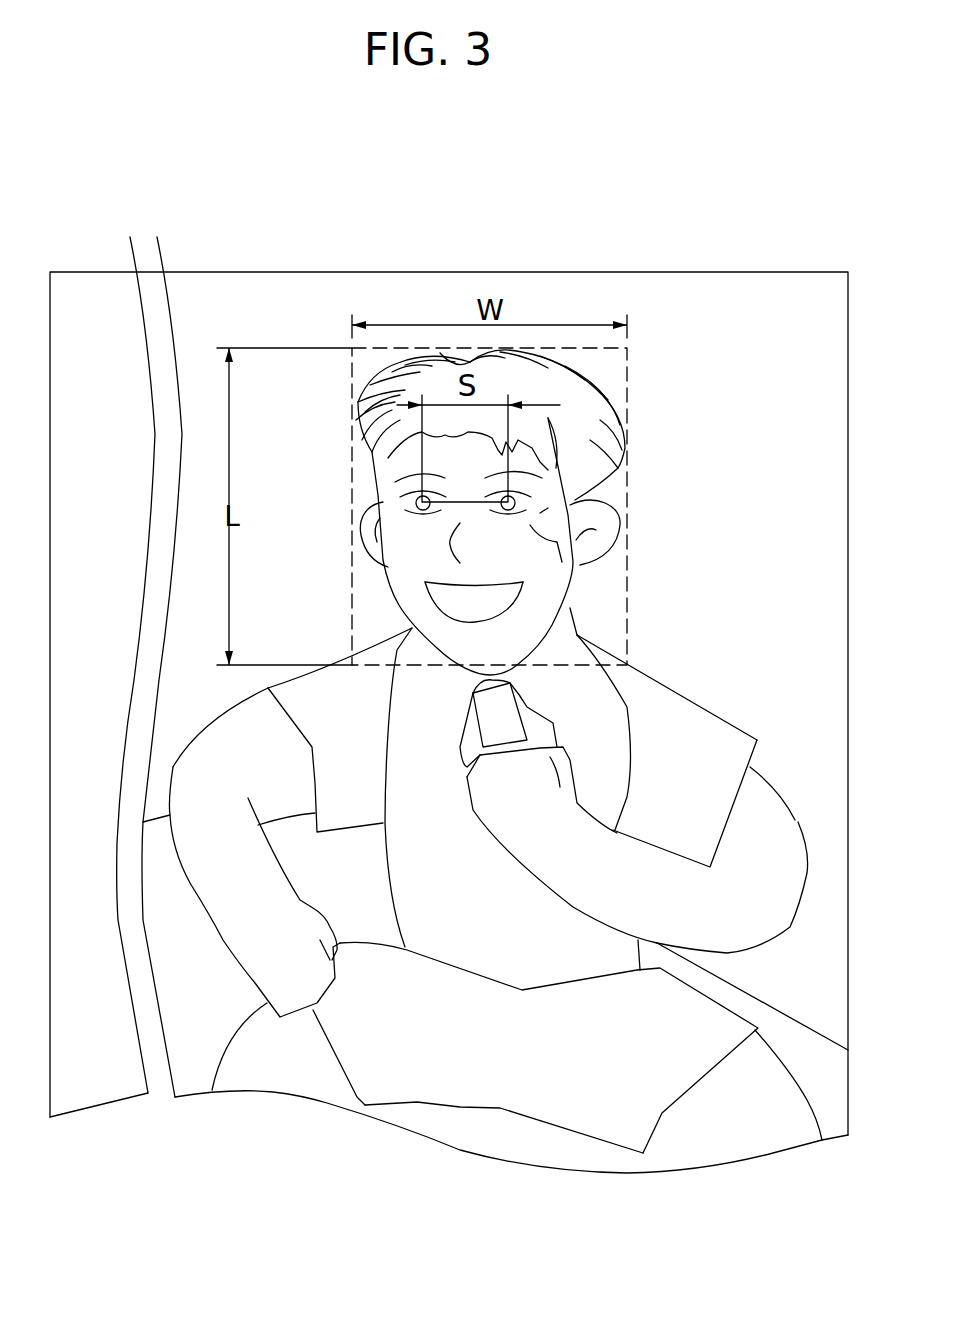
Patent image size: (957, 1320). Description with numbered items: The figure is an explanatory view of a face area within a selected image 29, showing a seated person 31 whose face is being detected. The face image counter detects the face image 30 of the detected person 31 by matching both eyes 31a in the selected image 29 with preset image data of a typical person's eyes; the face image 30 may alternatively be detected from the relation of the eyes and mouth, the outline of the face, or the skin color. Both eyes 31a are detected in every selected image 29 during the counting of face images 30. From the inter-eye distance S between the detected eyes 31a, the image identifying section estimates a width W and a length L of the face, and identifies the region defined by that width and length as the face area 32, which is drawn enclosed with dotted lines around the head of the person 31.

The selected image 29 is at (647, 275).
The face image 30 is at (407, 557).
The detected person 31 is at (670, 562).
The both eyes 31a is at (377, 542).
The face area 32 is at (627, 592).